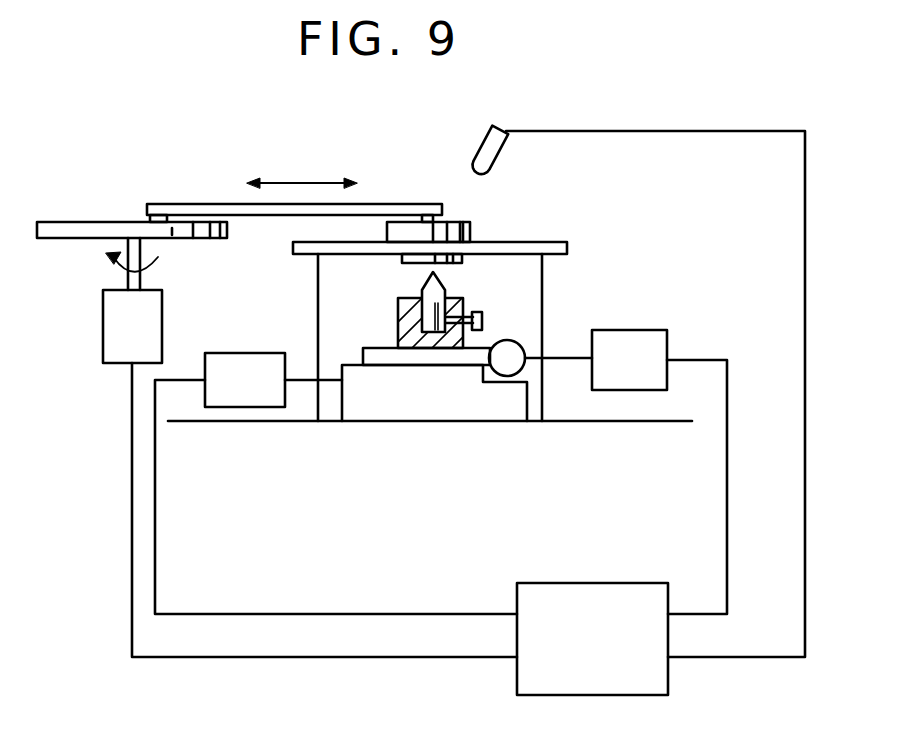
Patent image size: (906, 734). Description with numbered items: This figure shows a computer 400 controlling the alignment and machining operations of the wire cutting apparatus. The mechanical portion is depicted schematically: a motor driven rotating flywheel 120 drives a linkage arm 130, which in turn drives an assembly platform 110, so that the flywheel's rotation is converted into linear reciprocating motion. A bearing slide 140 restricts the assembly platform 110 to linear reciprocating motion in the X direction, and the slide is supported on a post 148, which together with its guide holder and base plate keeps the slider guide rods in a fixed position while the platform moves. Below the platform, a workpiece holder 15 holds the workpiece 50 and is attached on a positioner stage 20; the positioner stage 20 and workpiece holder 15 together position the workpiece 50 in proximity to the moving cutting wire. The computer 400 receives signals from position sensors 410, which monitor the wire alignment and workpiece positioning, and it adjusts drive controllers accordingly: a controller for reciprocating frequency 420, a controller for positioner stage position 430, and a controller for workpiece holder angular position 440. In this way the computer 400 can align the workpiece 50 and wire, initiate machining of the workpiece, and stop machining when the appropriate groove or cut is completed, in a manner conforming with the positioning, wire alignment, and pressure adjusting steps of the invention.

The flywheel 120 is at (80, 221).
The linkage arm 130 is at (193, 203).
The position sensors 410 is at (466, 135).
The assembly platform 110 is at (471, 232).
The bearing slide 140 is at (570, 248).
The post 148 is at (310, 299).
The workpiece holder 15 is at (384, 326).
The workpiece 50 is at (449, 273).
The reciprocating frequency drive controller 420 is at (151, 339).
The positioner stage position drive controller 430 is at (265, 393).
The positioner stage 20 is at (415, 406).
The workpiece holder angular position drive controller 440 is at (609, 381).
The computer 400 is at (623, 657).